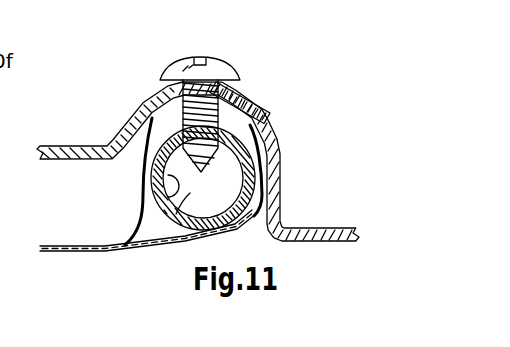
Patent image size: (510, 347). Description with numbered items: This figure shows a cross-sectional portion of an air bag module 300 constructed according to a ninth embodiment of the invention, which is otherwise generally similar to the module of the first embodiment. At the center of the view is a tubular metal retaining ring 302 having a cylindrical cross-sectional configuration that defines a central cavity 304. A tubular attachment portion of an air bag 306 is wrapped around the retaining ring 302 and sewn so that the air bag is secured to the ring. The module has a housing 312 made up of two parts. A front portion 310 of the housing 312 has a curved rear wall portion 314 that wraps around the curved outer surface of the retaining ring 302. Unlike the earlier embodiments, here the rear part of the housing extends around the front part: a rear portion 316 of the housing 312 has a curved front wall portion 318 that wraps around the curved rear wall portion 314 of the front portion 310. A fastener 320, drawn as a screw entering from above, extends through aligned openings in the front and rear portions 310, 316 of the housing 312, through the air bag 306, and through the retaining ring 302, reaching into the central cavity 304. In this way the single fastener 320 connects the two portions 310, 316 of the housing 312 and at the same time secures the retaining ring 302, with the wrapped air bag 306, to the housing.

The air bag module 300 is at (320, 78).
The retaining ring 302 is at (163, 168).
The central cavity 304 is at (143, 228).
The air bag 306 is at (139, 249).
The front portion 310 is at (335, 228).
The housing 312 is at (110, 107).
The curved rear wall portion 314 is at (272, 130).
The rear portion 316 is at (70, 146).
The curved front wall portion 318 is at (256, 99).
The fastener 320 is at (189, 58).